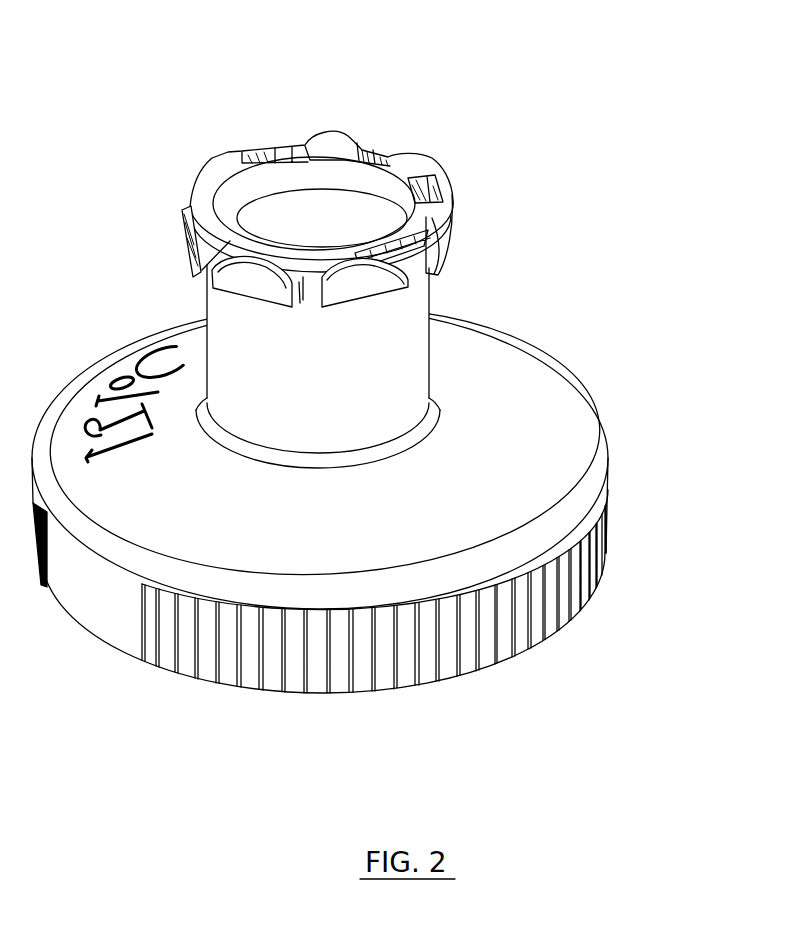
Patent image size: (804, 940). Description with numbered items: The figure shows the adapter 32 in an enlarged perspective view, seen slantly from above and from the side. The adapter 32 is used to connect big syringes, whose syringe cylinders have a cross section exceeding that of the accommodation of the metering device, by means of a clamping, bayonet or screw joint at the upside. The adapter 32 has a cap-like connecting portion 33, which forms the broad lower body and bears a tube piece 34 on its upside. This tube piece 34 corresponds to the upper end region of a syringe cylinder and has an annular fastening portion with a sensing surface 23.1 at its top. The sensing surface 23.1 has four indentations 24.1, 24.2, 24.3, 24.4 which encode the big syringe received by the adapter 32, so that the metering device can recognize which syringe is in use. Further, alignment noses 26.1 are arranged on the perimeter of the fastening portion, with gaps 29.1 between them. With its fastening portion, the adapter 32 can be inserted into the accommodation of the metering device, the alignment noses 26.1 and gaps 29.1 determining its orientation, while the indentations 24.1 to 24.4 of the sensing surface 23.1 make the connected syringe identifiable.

The adapter 32 is at (569, 346).
The cap-like connecting portion 33 is at (197, 531).
The tube piece 34 is at (358, 439).
The sensing surface 23.1 is at (205, 272).
The indentation 24.1 is at (440, 258).
The indentation 24.2 is at (446, 196).
The indentation 24.3 is at (374, 150).
The indentation 24.4 is at (272, 150).
The alignment nose 26.1 is at (250, 297).
The gap 29.1 is at (309, 300).